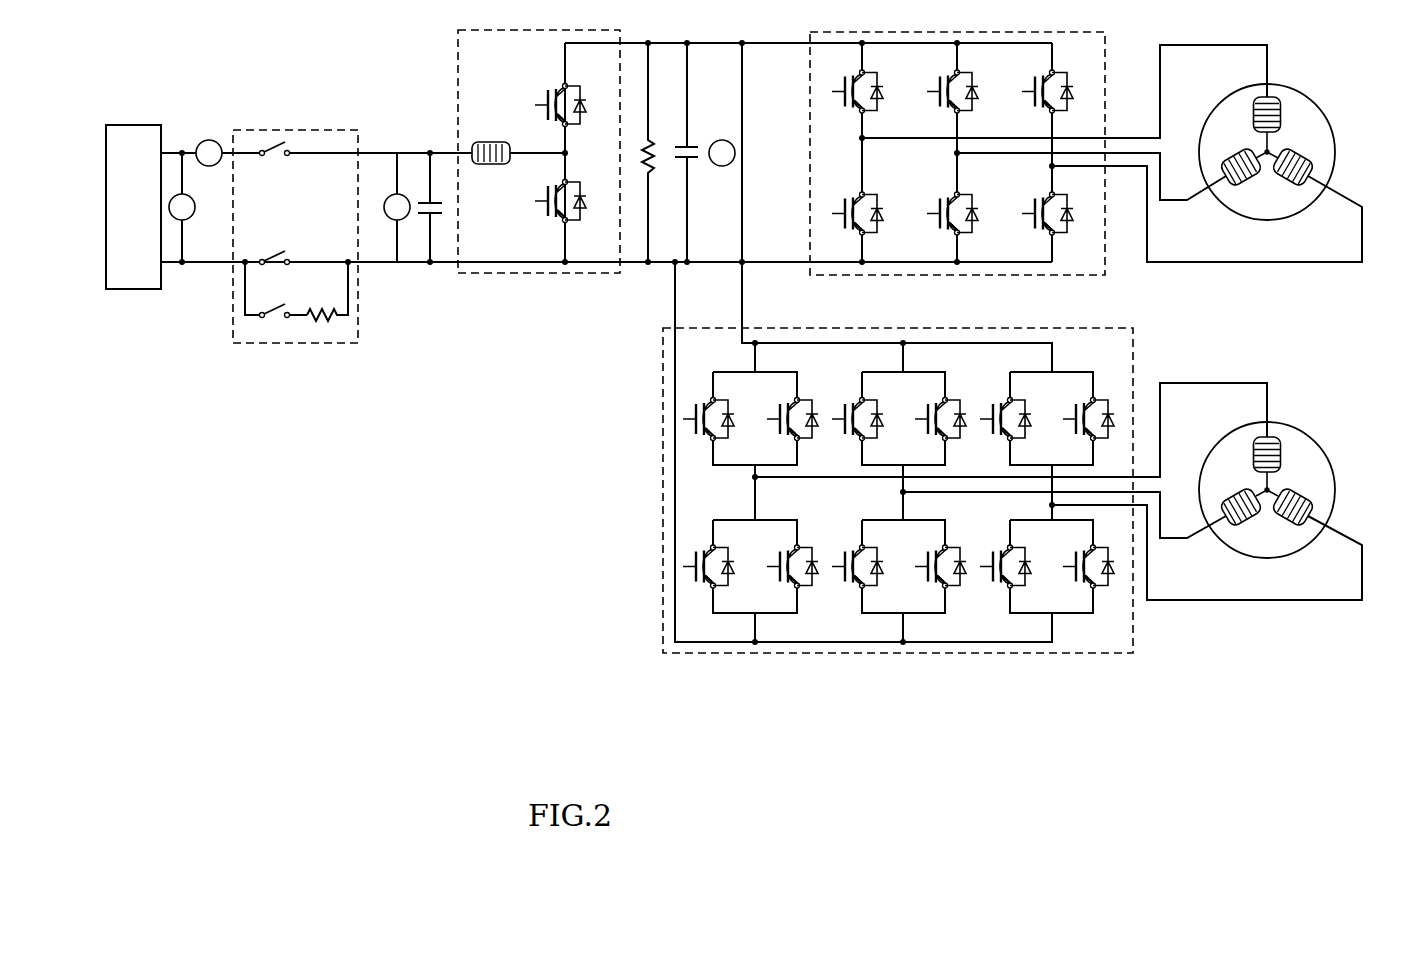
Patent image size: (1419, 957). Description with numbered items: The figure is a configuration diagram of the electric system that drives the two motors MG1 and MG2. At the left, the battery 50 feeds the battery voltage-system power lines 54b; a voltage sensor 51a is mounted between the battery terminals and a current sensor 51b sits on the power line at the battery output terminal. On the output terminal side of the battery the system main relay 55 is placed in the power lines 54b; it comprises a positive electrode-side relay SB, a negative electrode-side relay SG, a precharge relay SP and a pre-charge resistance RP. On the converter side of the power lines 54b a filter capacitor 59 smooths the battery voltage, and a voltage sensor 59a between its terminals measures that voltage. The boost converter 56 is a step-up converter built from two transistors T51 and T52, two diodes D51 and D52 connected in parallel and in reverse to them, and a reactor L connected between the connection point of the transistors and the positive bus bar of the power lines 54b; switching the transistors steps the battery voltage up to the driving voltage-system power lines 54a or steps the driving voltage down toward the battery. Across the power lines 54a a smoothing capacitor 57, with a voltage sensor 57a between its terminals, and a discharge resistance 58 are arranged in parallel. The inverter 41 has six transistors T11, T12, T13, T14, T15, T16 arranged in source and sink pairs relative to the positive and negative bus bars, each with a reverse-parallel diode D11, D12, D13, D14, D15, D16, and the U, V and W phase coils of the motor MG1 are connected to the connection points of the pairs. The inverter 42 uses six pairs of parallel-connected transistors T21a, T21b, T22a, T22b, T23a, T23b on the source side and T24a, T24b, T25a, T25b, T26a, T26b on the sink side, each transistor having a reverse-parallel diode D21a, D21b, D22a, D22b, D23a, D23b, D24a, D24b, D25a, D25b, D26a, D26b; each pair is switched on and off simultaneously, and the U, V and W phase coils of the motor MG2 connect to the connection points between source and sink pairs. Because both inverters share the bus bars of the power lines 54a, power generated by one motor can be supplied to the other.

The battery 50 is at (133, 125).
The voltage sensor 51a is at (191, 218).
The current sensor 51b is at (209, 140).
The system main relay 55 is at (300, 130).
The positive electrode-side relay SB is at (272, 146).
The negative electrode-side relay SG is at (283, 256).
The precharge relay SP is at (272, 312).
The pre-charge resistance RP is at (322, 325).
The battery voltage-system power lines 54b is at (382, 153).
The filter capacitor 59 is at (430, 200).
The voltage sensor 59a is at (397, 262).
The boost converter 56 is at (545, 275).
The reactor L is at (490, 140).
The transistor T51 is at (548, 98).
The transistor T52 is at (548, 196).
The diode D51 is at (580, 112).
The diode D52 is at (580, 208).
The smoothing capacitor 57 is at (683, 143).
The voltage sensor 57a is at (722, 140).
The discharge resistance 58 is at (650, 170).
The driving voltage-system power lines 54a is at (793, 43).
The inverter 41 is at (900, 278).
The inverter 42 is at (1043, 328).
The transistor T11 is at (846, 82).
The transistor T12 is at (941, 82).
The transistor T13 is at (1036, 82).
The transistor T14 is at (846, 204).
The transistor T15 is at (941, 204).
The transistor T16 is at (1036, 204).
The diode D11 is at (878, 104).
The diode D12 is at (973, 104).
The diode D13 is at (1068, 104).
The diode D14 is at (878, 226).
The diode D15 is at (973, 226).
The diode D16 is at (1068, 226).
The transistor T21a is at (692, 408).
The transistor T21b is at (778, 410).
The transistor T22a is at (842, 410).
The transistor T22b is at (926, 410).
The transistor T23a is at (991, 410).
The transistor T23b is at (1074, 410).
The transistor T24a is at (692, 556).
The transistor T24b is at (778, 557).
The transistor T25a is at (842, 557).
The transistor T25b is at (926, 557).
The transistor T26a is at (991, 557).
The transistor T26b is at (1074, 557).
The diode D21a is at (741, 431).
The diode D21b is at (825, 431).
The diode D22a is at (891, 431).
The diode D22b is at (973, 431).
The diode D23a is at (1039, 431).
The diode D23b is at (1113, 410).
The diode D24a is at (741, 579).
The diode D24b is at (825, 579).
The diode D25a is at (891, 579).
The diode D25b is at (973, 579).
The diode D26a is at (1039, 579).
The diode D26b is at (1113, 578).
The motor MG1 is at (1298, 88).
The motor MG2 is at (1298, 428).
The U phase U is at (1263, 266).
The V phase V is at (1221, 338).
The W phase W is at (1313, 338).